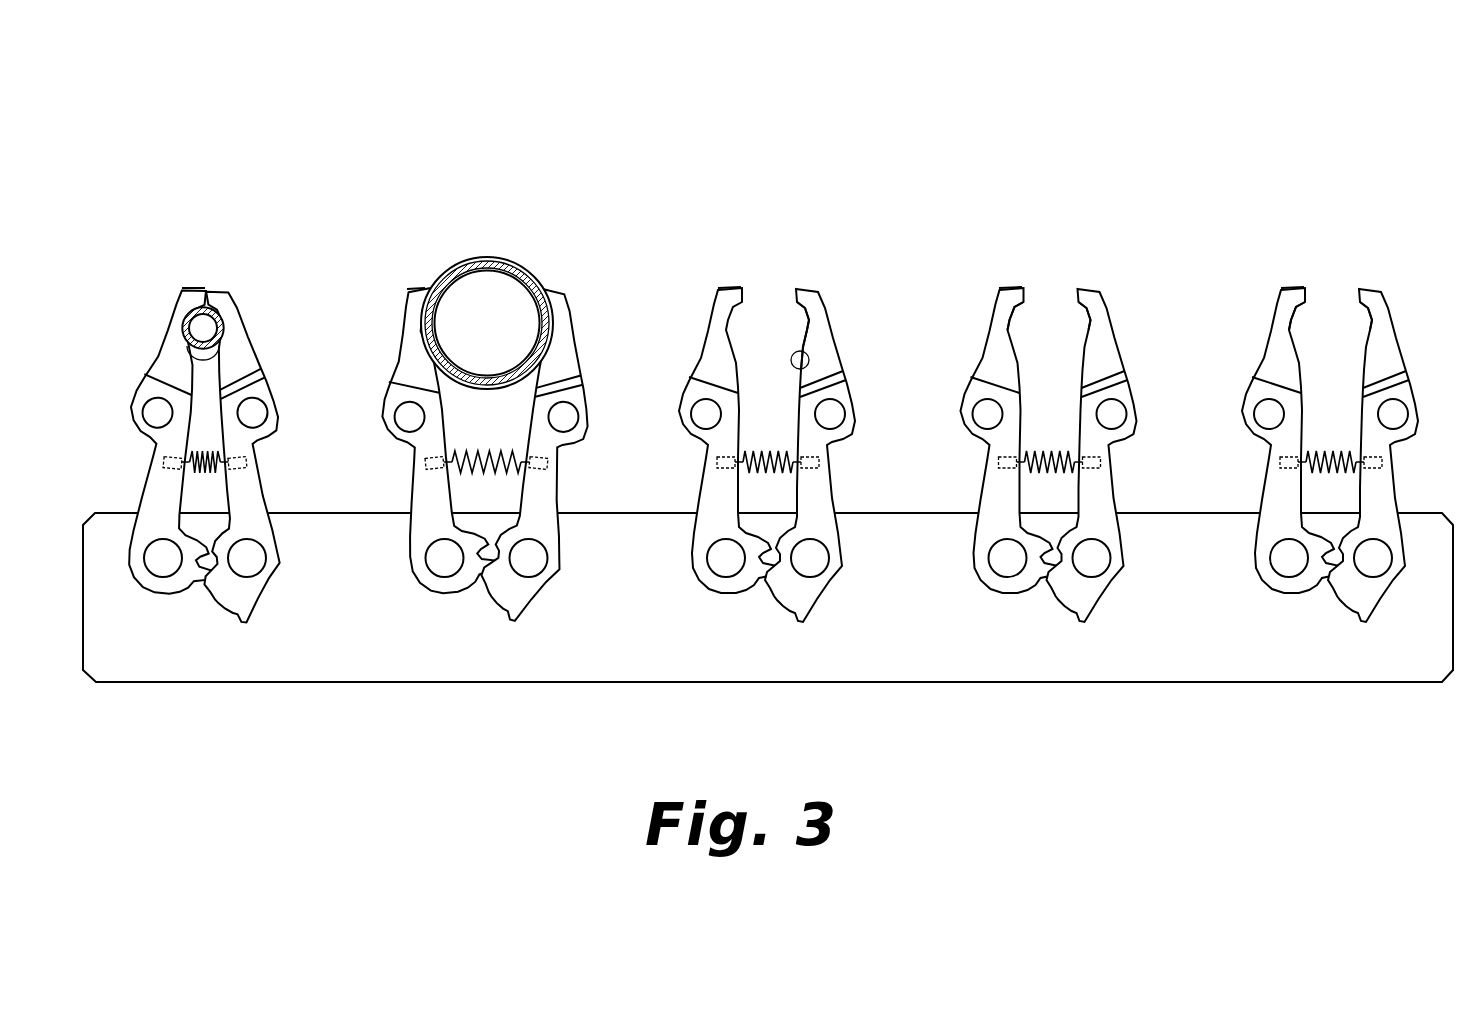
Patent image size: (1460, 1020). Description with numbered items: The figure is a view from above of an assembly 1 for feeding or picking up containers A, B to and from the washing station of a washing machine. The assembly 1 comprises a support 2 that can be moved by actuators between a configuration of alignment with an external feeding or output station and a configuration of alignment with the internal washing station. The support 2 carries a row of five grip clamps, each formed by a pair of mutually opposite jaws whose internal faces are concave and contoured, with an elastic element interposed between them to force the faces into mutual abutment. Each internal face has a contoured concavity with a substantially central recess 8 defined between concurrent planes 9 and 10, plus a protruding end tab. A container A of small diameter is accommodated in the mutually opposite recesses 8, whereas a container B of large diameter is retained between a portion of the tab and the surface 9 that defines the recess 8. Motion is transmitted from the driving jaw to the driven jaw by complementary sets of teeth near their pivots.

The assembly 1 is at (996, 160).
The support 2 is at (336, 646).
The central recess 8 is at (806, 330).
The concurrent plane 9 is at (806, 370).
The concurrent plane 10 is at (805, 314).
The container of small diameter A is at (202, 328).
The container of large diameter B is at (462, 277).